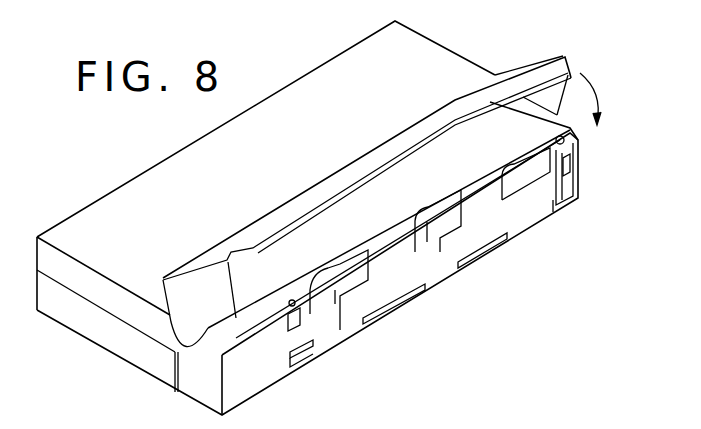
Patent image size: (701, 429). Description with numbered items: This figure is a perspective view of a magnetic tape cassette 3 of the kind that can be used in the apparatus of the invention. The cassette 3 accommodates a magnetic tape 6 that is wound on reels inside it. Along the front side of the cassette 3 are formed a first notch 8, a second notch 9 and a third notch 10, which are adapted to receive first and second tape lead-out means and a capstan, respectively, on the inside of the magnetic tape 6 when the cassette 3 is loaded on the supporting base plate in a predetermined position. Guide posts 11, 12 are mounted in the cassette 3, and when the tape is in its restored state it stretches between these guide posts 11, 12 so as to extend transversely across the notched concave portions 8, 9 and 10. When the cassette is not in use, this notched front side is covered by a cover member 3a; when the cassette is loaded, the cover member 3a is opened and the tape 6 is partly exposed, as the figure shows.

The magnetic tape cassette 3 is at (453, 67).
The cover member 3a is at (538, 62).
The magnetic tape 6 is at (402, 283).
The first notch 8 is at (521, 178).
The second notch 9 is at (442, 243).
The third notch 10 is at (338, 308).
The guide post 11 is at (565, 165).
The guide post 12 is at (287, 330).